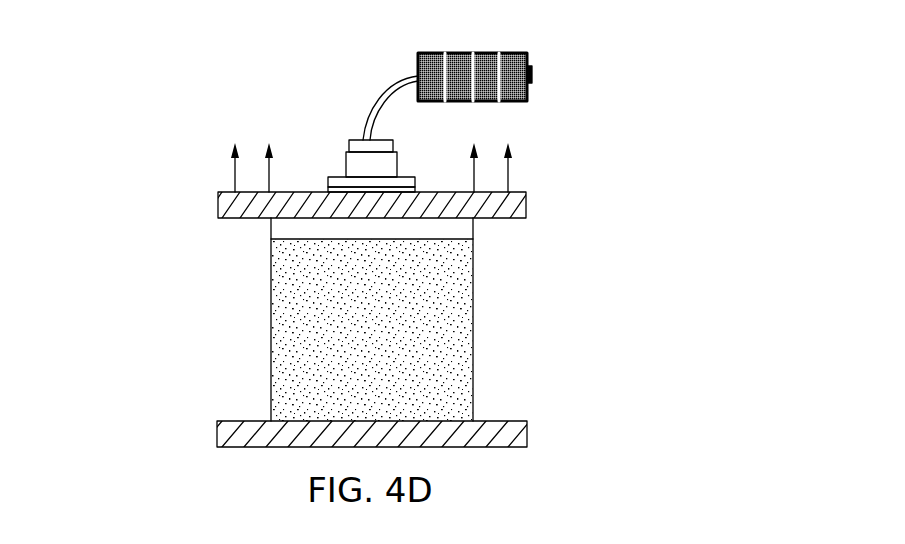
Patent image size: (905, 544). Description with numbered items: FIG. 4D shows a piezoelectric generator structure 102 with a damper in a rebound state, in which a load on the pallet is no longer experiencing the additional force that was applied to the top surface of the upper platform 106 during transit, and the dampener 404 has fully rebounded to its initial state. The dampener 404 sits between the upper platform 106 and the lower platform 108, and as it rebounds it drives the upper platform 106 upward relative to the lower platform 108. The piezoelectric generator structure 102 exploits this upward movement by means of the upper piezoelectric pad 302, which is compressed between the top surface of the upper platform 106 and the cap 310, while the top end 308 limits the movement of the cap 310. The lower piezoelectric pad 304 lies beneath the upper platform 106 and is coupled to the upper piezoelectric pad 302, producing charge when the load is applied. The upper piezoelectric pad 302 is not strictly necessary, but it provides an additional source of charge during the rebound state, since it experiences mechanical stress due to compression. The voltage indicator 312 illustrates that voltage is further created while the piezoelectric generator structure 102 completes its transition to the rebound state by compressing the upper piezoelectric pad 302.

The piezoelectric generator structure 102 is at (190, 142).
The upper platform 106 is at (232, 218).
The lower platform 108 is at (217, 432).
The upper piezoelectric pad 302 is at (328, 188).
The lower piezoelectric pad 304 is at (474, 232).
The top end 308 is at (364, 138).
The cap 310 is at (398, 163).
The voltage indicator 312 is at (517, 52).
The dampener 404 is at (271, 333).